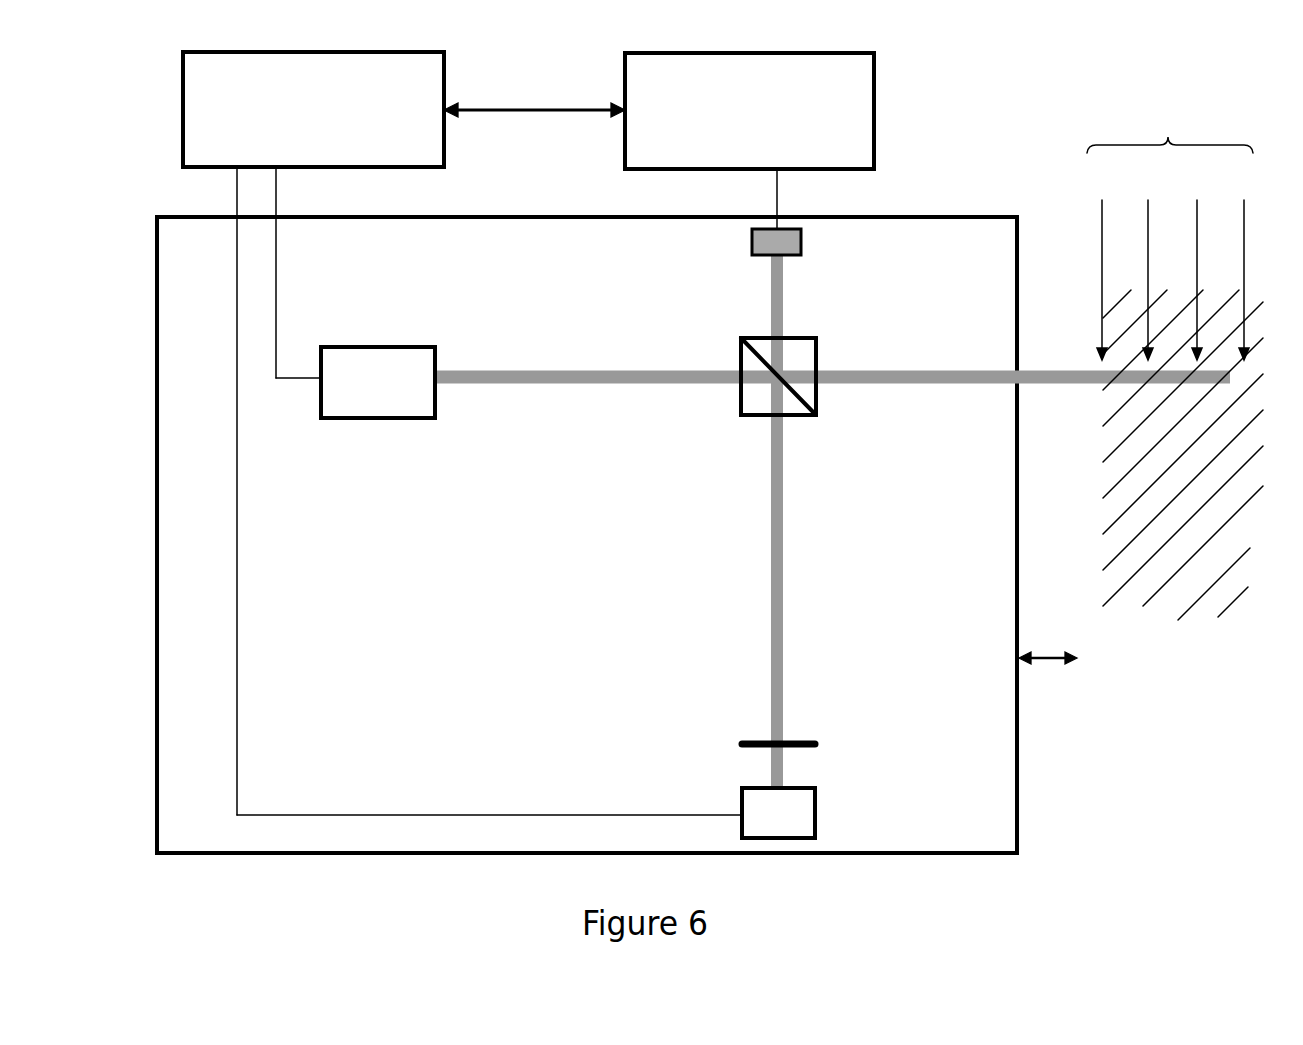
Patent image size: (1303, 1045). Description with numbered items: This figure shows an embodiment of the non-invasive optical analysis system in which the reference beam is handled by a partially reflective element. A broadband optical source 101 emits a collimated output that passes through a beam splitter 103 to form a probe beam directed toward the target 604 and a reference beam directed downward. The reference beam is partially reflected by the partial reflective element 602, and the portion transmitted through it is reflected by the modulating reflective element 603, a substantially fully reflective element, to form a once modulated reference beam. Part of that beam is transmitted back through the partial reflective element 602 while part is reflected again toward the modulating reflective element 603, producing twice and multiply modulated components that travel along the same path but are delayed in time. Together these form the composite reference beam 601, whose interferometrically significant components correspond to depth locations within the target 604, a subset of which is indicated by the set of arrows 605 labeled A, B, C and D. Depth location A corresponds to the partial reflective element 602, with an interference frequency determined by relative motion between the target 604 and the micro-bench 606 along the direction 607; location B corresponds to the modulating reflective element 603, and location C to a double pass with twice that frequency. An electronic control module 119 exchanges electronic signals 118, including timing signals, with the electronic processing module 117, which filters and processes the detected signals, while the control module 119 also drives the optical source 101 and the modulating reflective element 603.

The broadband optical source 101 is at (388, 425).
The beam splitter 103 is at (727, 408).
The electronic processing module 117 is at (884, 84).
The electronic signals 118 is at (555, 122).
The electronic control module 119 is at (173, 100).
The composite reference beam 601 is at (787, 543).
The partial reflective element 602 is at (742, 735).
The modulating reflective element 603 is at (825, 798).
The target 604 is at (1183, 628).
The set of arrows 605 is at (1166, 133).
The micro-bench 606 is at (1019, 773).
The direction of relative motion 607 is at (1052, 667).